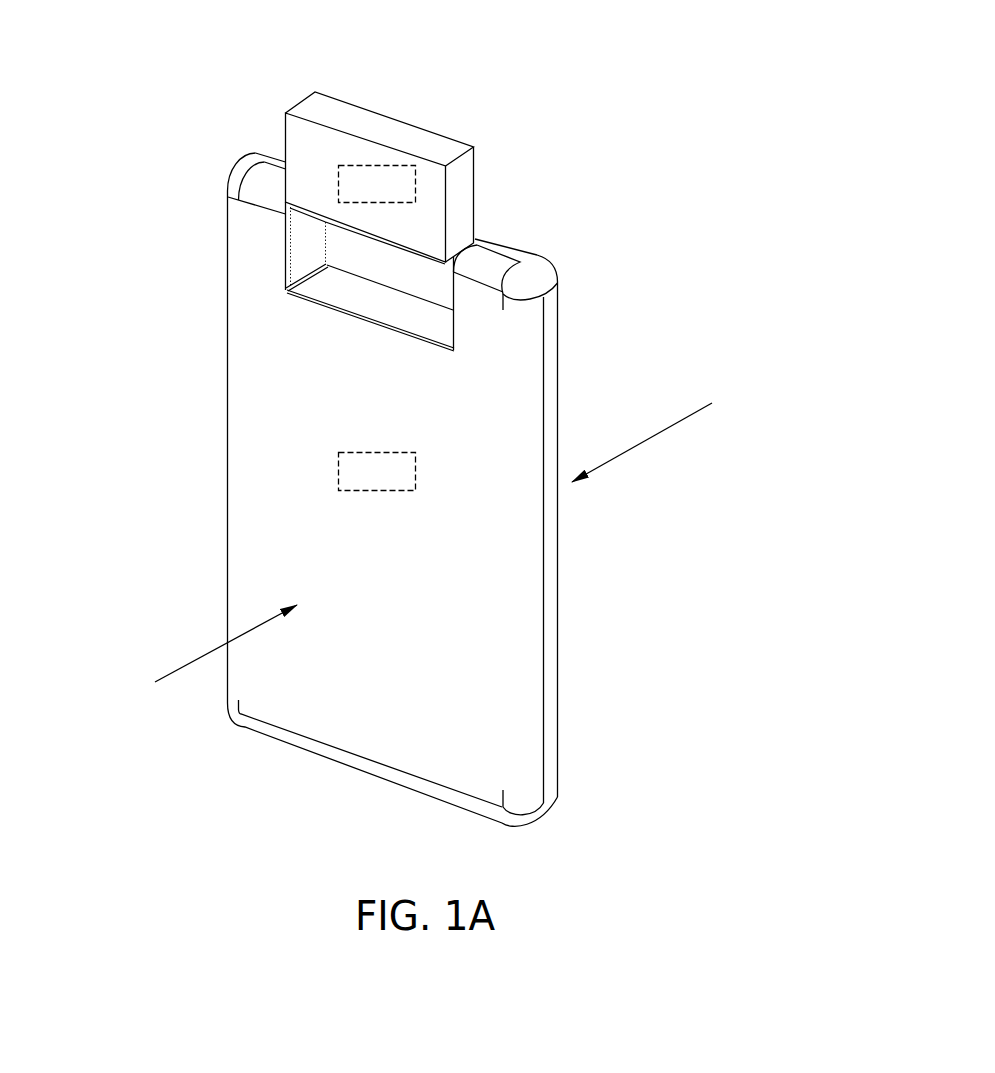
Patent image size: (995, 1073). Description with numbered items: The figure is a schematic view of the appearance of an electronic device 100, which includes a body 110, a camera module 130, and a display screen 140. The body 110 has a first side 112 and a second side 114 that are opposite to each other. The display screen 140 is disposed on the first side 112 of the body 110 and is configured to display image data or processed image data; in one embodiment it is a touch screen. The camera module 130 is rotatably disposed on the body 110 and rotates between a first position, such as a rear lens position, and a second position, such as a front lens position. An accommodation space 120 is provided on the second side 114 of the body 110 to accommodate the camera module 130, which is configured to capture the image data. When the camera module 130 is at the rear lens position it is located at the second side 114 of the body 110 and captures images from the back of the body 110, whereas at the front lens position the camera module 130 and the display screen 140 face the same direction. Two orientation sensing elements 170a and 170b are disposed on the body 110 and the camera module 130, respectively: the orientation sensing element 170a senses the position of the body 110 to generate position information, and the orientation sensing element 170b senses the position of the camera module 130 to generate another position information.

The electronic device 100 is at (128, 68).
The body 110 is at (268, 474).
The first side 112 is at (632, 444).
The second side 114 is at (194, 658).
The accommodation space 120 is at (329, 269).
The camera module 130 is at (428, 143).
The display screen 140 is at (556, 348).
The orientation sensing element 170a is at (403, 482).
The orientation sensing element 170b is at (403, 198).